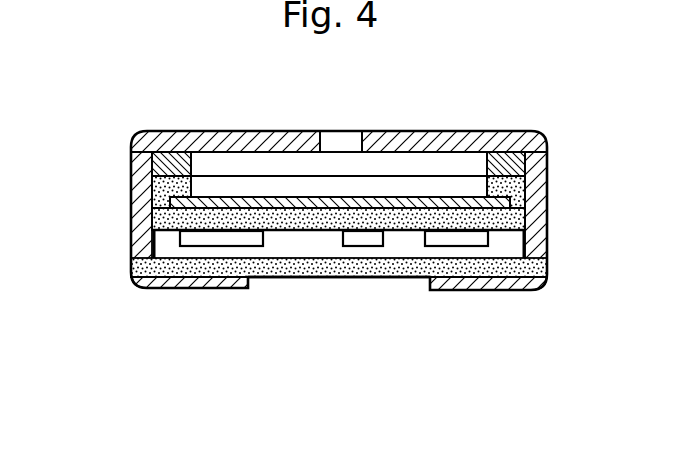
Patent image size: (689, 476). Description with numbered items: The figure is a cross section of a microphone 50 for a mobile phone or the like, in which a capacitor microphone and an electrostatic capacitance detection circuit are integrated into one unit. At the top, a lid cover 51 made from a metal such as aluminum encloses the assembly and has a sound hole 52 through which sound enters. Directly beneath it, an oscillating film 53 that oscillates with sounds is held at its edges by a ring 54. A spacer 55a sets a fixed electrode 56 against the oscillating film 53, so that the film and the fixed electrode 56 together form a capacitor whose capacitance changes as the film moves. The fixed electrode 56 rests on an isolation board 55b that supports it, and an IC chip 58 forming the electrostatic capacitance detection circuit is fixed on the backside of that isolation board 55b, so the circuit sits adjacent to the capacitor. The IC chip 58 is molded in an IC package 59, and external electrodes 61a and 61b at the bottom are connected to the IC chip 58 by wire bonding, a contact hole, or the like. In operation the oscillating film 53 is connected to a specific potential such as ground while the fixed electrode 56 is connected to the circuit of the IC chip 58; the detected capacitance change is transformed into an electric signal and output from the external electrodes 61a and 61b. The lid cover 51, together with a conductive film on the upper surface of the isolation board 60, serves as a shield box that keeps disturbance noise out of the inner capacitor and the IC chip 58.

The microphone 50 is at (477, 97).
The lid cover 51 is at (418, 142).
The sound hole 52 is at (338, 140).
The oscillating film 53 is at (290, 176).
The ring 54 is at (527, 158).
The spacer 55a is at (513, 190).
The isolation board 55b is at (153, 218).
The fixed electrode 56 is at (153, 200).
The IC chip 58 is at (190, 237).
The IC package 59 is at (313, 248).
The isolation board 60 is at (382, 278).
The external electrode 61a is at (193, 278).
The external electrode 61b is at (495, 291).